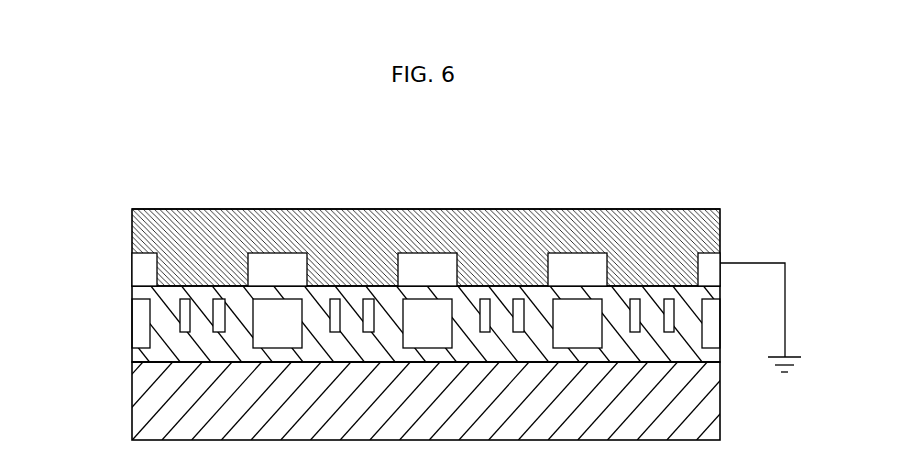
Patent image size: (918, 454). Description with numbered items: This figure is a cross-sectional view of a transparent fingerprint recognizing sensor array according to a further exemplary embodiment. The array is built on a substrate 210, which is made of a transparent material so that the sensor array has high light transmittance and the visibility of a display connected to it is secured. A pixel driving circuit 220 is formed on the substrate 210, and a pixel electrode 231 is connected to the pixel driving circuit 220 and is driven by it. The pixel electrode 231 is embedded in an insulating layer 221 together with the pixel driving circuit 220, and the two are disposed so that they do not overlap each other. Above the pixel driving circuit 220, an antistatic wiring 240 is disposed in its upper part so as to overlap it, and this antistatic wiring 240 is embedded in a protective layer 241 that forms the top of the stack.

The substrate 210 is at (132, 398).
The pixel driving circuit 220 is at (132, 323).
The insulating layer 221 is at (132, 360).
The pixel electrode 231 is at (208, 208).
The antistatic wiring 240 is at (132, 270).
The protective layer 241 is at (132, 229).